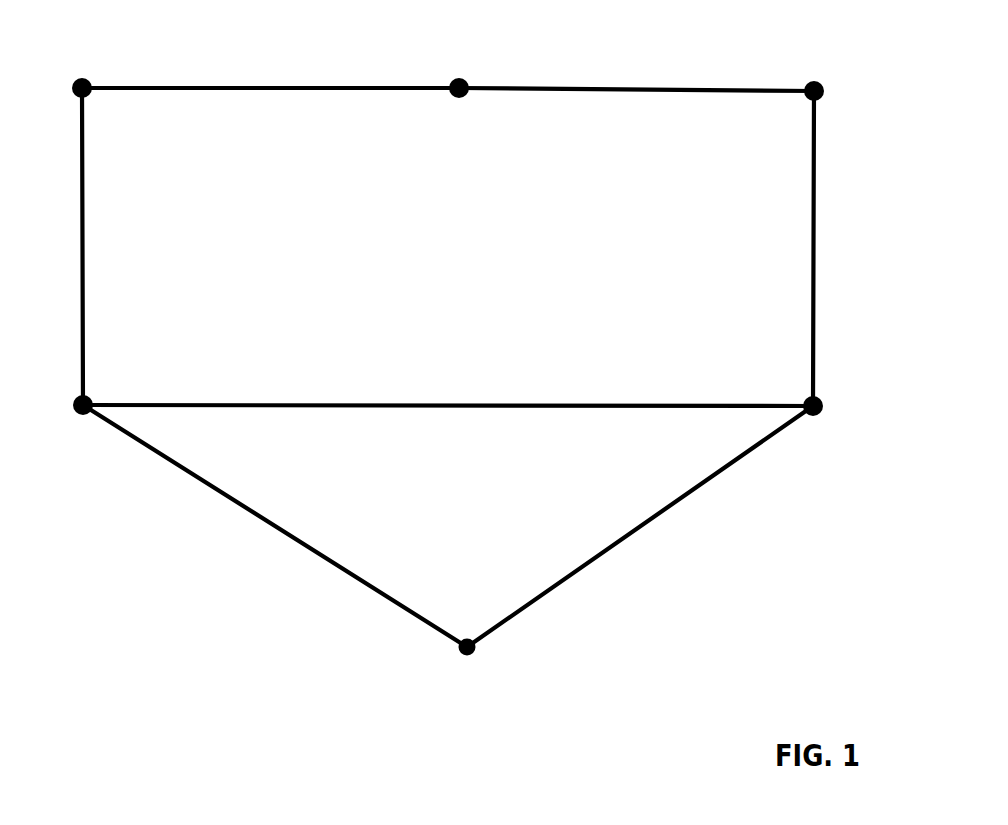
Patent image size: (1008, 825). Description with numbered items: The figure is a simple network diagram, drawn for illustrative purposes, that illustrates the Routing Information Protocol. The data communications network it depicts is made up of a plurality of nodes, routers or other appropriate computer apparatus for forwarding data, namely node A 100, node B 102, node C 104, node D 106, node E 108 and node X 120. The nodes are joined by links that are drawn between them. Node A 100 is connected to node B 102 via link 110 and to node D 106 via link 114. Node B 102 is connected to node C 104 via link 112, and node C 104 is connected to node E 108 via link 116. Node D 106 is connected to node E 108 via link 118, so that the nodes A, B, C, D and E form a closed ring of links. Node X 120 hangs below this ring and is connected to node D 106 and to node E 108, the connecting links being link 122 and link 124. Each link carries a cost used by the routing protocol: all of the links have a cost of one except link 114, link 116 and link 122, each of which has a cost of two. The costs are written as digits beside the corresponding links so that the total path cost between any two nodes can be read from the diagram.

The node A 100 is at (155, 41).
The node B 102 is at (536, 47).
The node C 104 is at (900, 78).
The node D 106 is at (73, 405).
The node E 108 is at (900, 378).
The link 110 is at (315, 91).
The link 112 is at (693, 93).
The link 114 is at (163, 258).
The link 116 is at (807, 275).
The link 118 is at (683, 397).
The node X 120 is at (466, 656).
The link 122 is at (310, 558).
The link 124 is at (657, 528).